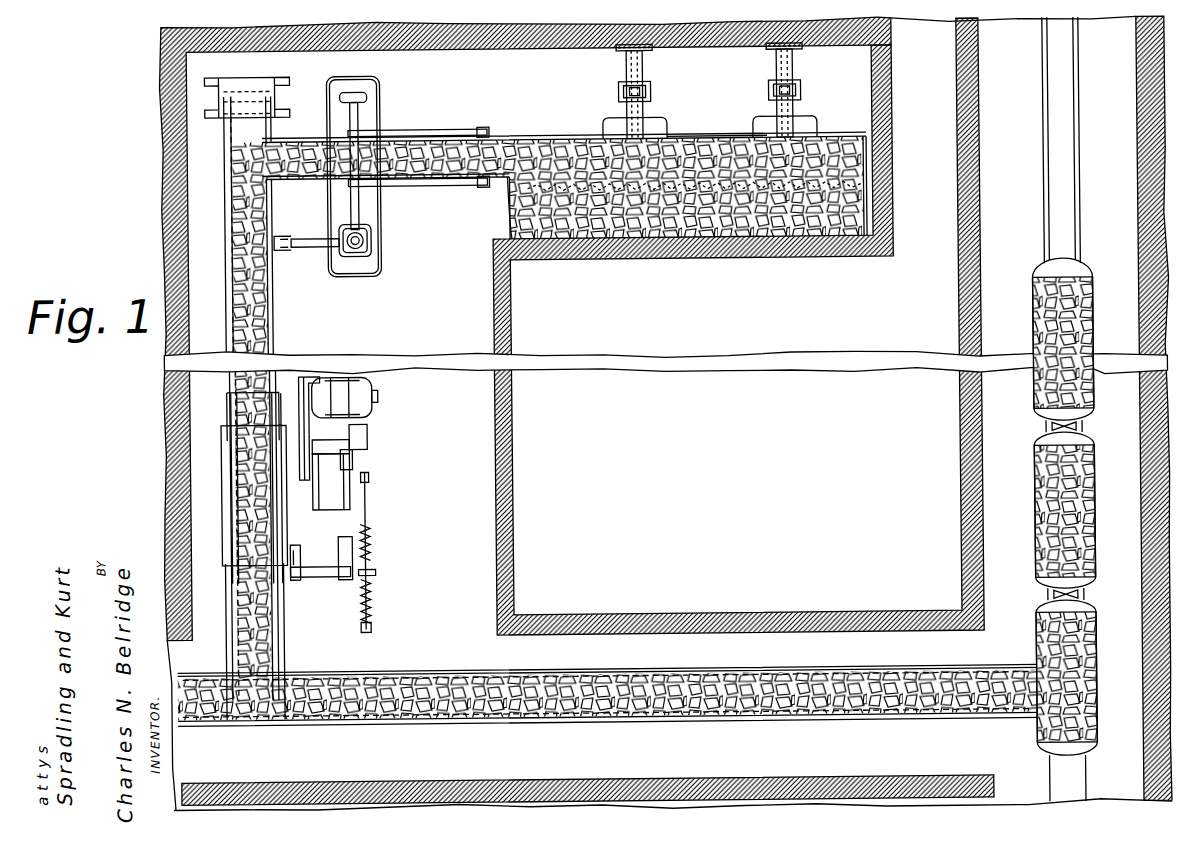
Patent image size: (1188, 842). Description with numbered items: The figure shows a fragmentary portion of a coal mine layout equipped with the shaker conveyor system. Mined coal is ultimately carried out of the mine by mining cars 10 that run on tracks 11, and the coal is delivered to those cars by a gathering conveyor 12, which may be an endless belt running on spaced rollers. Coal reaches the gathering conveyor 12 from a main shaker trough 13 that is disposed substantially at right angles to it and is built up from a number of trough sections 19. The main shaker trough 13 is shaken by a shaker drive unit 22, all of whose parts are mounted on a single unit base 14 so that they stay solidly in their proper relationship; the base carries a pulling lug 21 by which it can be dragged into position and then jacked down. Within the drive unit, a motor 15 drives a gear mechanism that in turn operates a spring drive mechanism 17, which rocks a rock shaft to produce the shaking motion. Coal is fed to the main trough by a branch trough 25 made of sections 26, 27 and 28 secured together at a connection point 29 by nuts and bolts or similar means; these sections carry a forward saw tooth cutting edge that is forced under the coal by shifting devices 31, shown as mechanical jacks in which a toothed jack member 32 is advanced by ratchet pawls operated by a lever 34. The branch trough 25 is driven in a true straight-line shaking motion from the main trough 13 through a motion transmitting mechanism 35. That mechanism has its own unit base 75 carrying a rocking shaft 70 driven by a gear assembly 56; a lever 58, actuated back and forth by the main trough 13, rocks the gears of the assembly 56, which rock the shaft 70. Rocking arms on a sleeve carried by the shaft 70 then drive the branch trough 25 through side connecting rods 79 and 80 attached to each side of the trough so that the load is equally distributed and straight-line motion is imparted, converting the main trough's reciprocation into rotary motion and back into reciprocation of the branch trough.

The mining cars 10 is at (1096, 391).
The tracks 11 is at (1078, 160).
The gathering conveyor 12 is at (813, 722).
The main shaker trough 13 is at (234, 606).
The unit base 14 is at (367, 444).
The motor 15 is at (373, 380).
The spring drive mechanism 17 is at (372, 538).
The trough sections 19 is at (228, 272).
The pulling lug 21 is at (297, 575).
The shaker drive unit 22 is at (331, 492).
The branch trough 25 is at (528, 138).
The branch trough section 26 is at (456, 184).
The branch trough section 27 is at (694, 138).
The branch trough section 28 is at (843, 138).
The connection point 29 is at (556, 137).
The shifting devices 31 is at (655, 95).
The jack member 32 is at (629, 70).
The lever 34 is at (649, 100).
The motion transmitting mechanism 35 is at (383, 212).
The gear assembly 56 is at (373, 252).
The lever 58 is at (310, 244).
The rocking shaft 70 is at (353, 211).
The unit base 75 is at (373, 240).
The side connecting rod 79 is at (435, 184).
The side connecting rod 80 is at (449, 128).